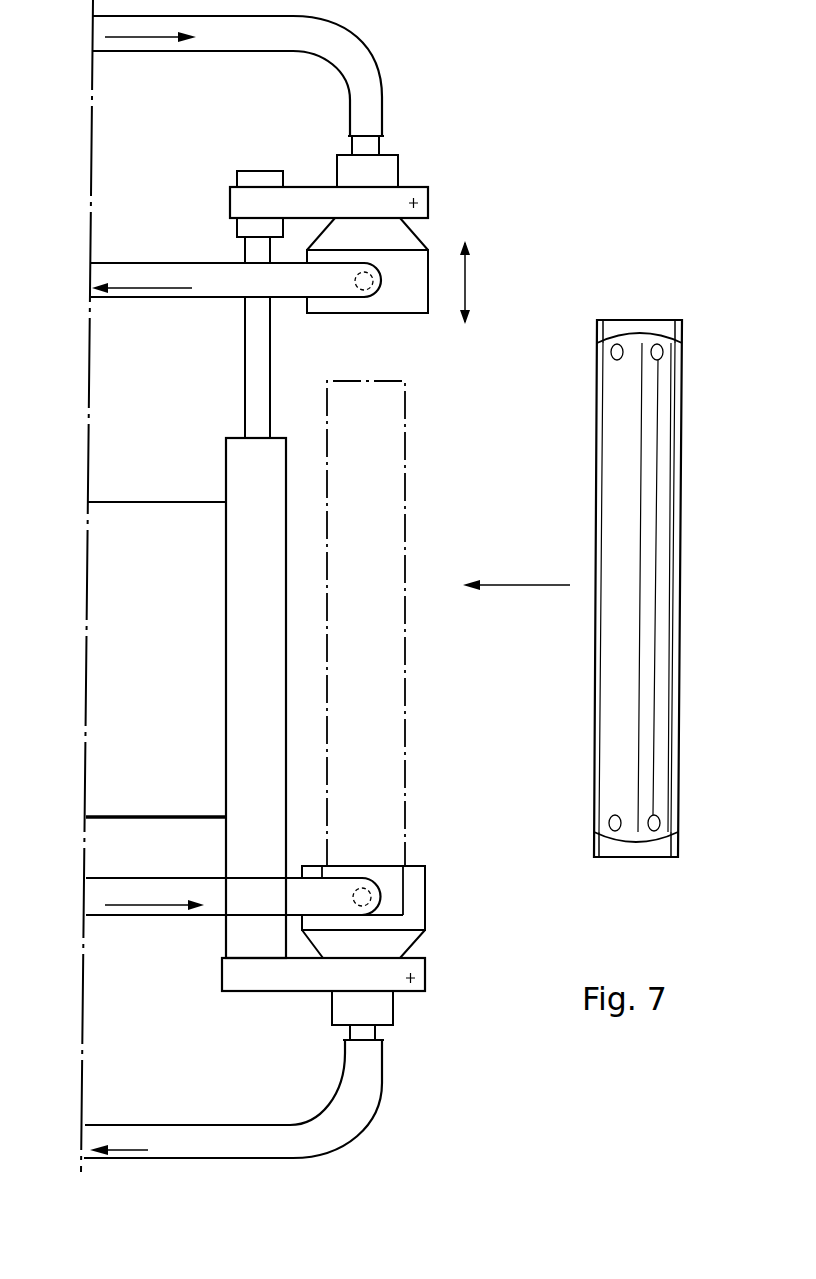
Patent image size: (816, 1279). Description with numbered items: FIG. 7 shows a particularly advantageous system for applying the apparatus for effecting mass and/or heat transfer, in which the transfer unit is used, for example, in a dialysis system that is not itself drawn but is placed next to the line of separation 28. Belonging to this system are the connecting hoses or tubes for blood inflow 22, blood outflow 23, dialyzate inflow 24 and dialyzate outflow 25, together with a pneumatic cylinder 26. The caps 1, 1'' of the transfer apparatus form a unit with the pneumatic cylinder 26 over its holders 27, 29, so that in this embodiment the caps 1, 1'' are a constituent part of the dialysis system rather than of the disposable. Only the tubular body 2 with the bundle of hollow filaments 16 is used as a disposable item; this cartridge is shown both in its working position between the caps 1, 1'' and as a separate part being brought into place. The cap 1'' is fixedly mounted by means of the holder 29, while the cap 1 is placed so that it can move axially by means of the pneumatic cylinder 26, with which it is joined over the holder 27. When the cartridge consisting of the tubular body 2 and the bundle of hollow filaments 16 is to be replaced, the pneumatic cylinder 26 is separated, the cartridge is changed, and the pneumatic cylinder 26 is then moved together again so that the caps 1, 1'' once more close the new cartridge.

The cap 1 is at (388, 271).
The cap 1'' is at (386, 912).
The tubular body 2 is at (398, 540).
The bundle of hollow filaments 16 is at (635, 585).
The connecting hose of blood inflow 22 is at (355, 70).
The connecting hose of blood outflow 23 is at (357, 1083).
The connecting hose of dialyzate inflow 24 is at (293, 905).
The connecting hose of dialyzate outflow 25 is at (267, 277).
The pneumatic cylinder 26 is at (240, 480).
The holder 27 is at (327, 202).
The line of separation 28 is at (92, 143).
The holder 29 is at (393, 977).